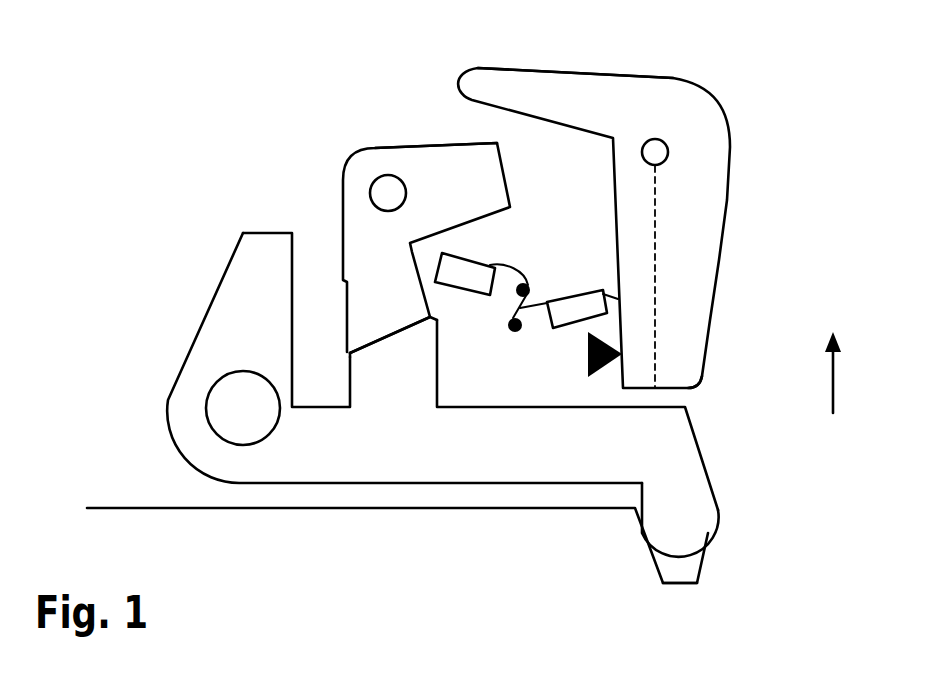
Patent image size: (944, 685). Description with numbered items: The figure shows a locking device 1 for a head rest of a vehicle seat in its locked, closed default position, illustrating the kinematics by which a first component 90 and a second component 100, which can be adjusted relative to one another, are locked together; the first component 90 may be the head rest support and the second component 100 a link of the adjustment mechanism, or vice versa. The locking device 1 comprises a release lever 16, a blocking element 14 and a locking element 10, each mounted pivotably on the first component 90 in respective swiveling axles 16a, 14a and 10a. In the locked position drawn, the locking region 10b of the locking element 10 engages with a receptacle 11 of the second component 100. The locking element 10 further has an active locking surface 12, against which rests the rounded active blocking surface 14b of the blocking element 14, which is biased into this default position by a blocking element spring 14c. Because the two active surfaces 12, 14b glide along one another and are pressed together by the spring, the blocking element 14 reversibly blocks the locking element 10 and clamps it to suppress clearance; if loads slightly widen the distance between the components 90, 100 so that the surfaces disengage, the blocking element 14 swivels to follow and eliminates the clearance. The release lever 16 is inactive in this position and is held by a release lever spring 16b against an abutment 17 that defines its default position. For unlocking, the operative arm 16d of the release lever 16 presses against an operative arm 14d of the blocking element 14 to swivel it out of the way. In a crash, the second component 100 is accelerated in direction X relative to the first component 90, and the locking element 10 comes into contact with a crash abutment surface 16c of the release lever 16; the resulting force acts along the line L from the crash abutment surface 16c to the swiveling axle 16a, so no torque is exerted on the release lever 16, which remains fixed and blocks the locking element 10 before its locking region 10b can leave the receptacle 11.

The locking device 1 is at (188, 118).
The locking element 10 is at (445, 453).
The swiveling axle 10a is at (243, 408).
The locking region 10b is at (678, 518).
The receptacle 11 is at (685, 572).
The active locking surface 12 is at (360, 355).
The blocking element 14 is at (412, 165).
The swiveling axle 14a is at (388, 193).
The active blocking surface 14b is at (357, 352).
The blocking element spring 14c is at (467, 275).
The operative arm 14d is at (458, 163).
The release lever 16 is at (703, 182).
The swiveling axle 16a is at (655, 152).
The release lever spring 16b is at (593, 305).
The crash abutment surface 16c is at (690, 390).
The operative arm 16d is at (537, 80).
The abutment 17 is at (588, 355).
The first component 90 is at (165, 320).
The second component 100 is at (323, 553).
The line L is at (658, 237).
The direction X is at (847, 372).